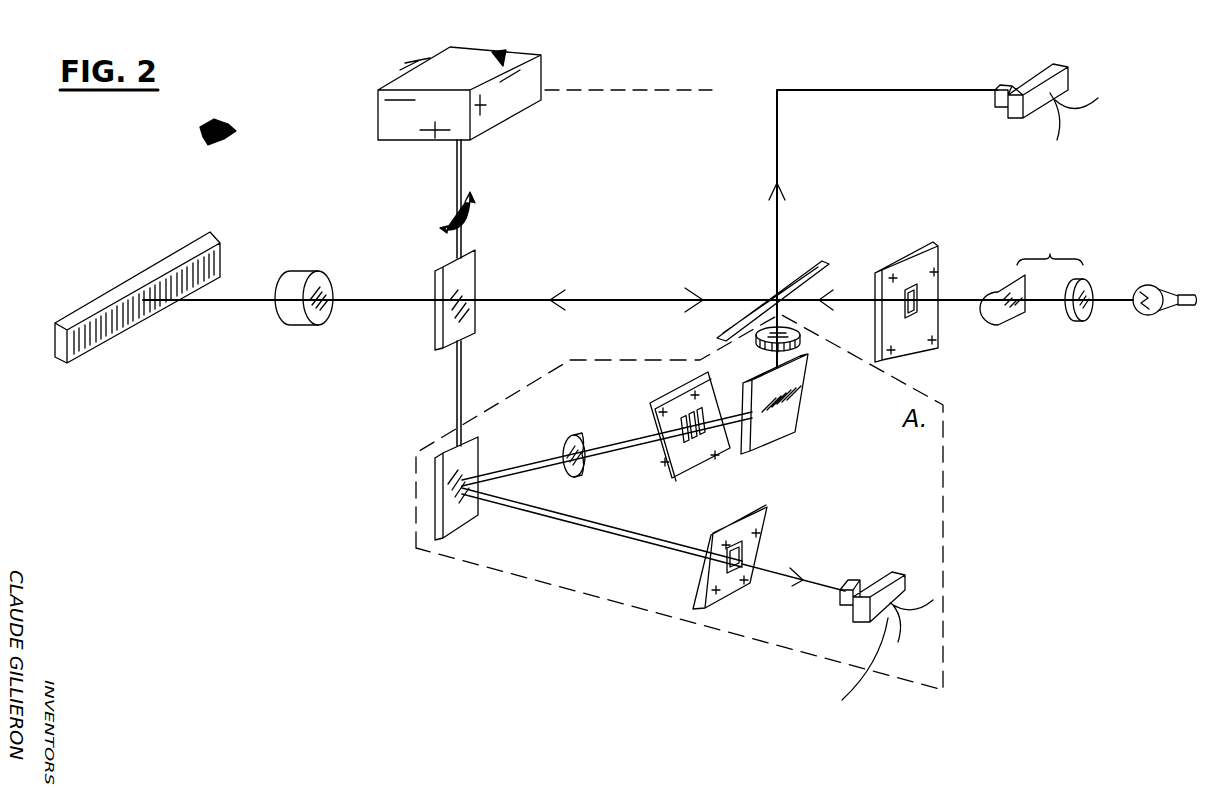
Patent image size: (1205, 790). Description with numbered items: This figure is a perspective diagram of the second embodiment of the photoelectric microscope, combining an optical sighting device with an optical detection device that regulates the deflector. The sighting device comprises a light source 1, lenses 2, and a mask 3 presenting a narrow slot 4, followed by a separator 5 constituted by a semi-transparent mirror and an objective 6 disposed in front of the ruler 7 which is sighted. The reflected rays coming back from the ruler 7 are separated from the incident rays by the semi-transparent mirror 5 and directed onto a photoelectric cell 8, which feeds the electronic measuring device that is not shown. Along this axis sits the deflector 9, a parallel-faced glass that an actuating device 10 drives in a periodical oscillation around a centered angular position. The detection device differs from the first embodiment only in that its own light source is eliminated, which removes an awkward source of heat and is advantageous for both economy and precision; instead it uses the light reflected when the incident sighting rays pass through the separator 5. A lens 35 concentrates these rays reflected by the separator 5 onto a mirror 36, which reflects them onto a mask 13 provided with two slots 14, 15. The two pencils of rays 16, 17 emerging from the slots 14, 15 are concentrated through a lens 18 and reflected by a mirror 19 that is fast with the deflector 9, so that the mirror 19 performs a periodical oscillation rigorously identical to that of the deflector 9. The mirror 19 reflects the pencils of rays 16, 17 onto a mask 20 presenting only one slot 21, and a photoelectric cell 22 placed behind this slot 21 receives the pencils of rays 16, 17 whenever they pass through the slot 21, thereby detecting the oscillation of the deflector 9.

The light source 1 is at (1152, 286).
The lenses 2 is at (1036, 277).
The mask 3 is at (950, 239).
The narrow slot 4 is at (912, 315).
The separator 5 is at (806, 266).
The objective 6 is at (300, 273).
The ruler 7 is at (221, 257).
The photoelectric cell 8 is at (1068, 78).
The deflector 9 is at (466, 279).
The actuating device 10 is at (508, 112).
The mask 13 is at (709, 386).
The slot 14 is at (678, 422).
The slot 15 is at (703, 437).
The pencil of rays 16 is at (597, 446).
The pencil of rays 17 is at (602, 462).
The lens 18 is at (567, 443).
The mirror 19 is at (434, 484).
The mask 20 is at (769, 512).
The slot 21 is at (727, 563).
The photoelectric cell 22 is at (893, 576).
The lens 35 is at (797, 333).
The mirror 36 is at (800, 398).